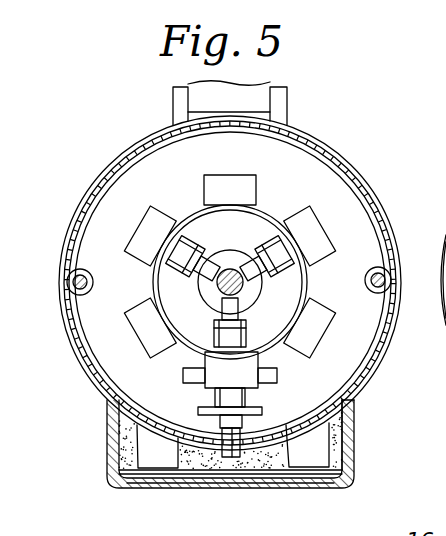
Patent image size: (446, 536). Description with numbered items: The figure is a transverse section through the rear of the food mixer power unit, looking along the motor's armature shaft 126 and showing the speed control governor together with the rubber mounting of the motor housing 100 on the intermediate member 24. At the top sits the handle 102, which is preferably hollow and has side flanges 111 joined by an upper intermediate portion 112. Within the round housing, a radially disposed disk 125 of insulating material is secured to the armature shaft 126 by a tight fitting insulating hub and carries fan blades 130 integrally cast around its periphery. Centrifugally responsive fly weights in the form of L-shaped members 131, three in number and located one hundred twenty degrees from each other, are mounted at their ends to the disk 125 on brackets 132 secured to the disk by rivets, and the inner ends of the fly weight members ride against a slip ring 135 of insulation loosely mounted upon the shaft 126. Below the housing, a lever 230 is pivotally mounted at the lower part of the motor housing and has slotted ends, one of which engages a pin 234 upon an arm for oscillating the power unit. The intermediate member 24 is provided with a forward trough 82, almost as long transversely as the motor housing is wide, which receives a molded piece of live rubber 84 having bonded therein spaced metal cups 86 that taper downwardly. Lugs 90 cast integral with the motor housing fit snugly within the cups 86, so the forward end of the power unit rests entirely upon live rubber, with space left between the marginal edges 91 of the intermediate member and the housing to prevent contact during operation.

The housing 100 is at (345, 172).
The handle 102 is at (277, 96).
The side flanges 111 is at (188, 92).
The upper intermediate portion 112 is at (188, 108).
The disk 125 is at (255, 292).
The armature shaft 126 is at (197, 283).
The fan blades 130 is at (240, 176).
The L-shaped members 131 is at (233, 250).
The brackets 132 is at (187, 225).
The slip ring 135 is at (260, 287).
The lever 230 is at (264, 410).
The pin 234 is at (228, 410).
The base 24 is at (354, 450).
The forward trough 82 is at (346, 433).
The molded piece of live rubber 84 is at (266, 480).
The metal cups 86 is at (190, 470).
The lugs 90 is at (327, 452).
The marginal edges 91 is at (356, 402).